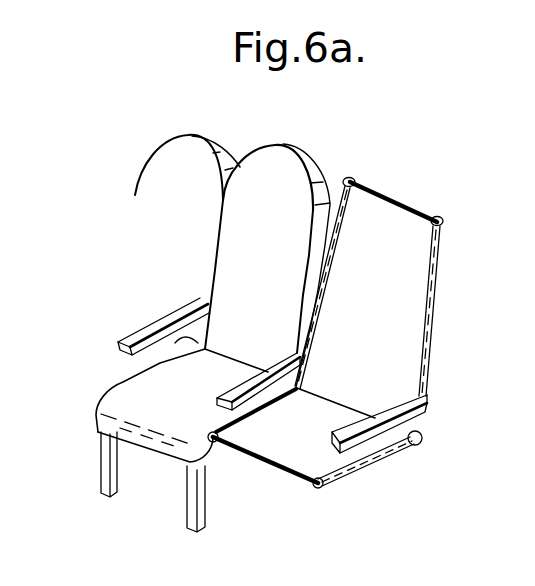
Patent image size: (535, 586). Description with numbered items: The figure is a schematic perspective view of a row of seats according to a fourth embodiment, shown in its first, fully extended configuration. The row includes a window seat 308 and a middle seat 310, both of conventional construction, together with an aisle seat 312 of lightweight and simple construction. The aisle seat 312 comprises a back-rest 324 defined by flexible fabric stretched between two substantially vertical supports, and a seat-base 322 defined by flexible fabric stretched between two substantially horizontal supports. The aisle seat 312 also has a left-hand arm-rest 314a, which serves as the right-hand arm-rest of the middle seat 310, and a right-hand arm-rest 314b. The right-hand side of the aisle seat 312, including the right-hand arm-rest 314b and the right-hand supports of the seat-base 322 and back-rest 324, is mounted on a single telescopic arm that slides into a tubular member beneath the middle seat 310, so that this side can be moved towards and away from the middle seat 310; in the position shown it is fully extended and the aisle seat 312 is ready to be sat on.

The window seat 308 is at (156, 163).
The middle seat 310 is at (288, 164).
The aisle seat 312 is at (388, 217).
The left-hand arm-rest 314a is at (219, 398).
The right-hand arm-rest 314b is at (412, 447).
The seat-base 322 is at (297, 453).
The back-rest 324 is at (407, 292).